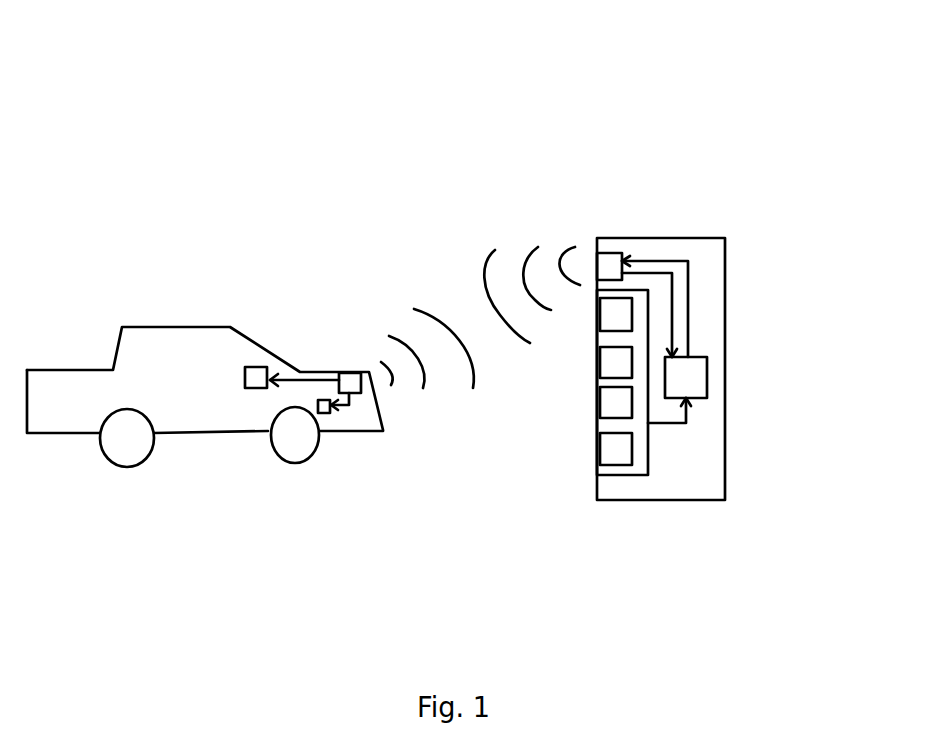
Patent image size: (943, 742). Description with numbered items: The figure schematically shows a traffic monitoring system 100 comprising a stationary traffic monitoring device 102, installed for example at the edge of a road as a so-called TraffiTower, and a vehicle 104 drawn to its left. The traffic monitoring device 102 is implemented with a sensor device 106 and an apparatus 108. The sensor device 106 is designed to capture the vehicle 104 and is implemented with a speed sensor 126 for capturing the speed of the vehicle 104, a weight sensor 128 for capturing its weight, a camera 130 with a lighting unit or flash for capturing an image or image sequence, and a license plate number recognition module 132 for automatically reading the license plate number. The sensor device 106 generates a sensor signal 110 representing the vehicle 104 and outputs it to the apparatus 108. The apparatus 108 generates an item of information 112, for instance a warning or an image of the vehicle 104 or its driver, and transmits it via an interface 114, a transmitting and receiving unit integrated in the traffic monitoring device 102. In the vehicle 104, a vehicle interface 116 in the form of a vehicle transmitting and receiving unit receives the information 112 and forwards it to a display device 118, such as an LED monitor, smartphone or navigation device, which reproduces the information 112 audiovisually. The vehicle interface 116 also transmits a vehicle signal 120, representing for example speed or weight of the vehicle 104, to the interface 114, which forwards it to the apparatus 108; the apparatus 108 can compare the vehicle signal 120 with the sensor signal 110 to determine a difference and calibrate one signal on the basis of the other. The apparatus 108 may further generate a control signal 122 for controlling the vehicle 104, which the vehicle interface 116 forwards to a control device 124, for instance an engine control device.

The traffic monitoring system 100 is at (78, 90).
The traffic monitoring device 102 is at (725, 255).
The vehicle 104 is at (171, 327).
The sensor device 106 is at (632, 477).
The apparatus 108 is at (707, 380).
The sensor signal 110 is at (677, 423).
The information 112 is at (303, 370).
The interface 114 is at (607, 253).
The vehicle interface 116 is at (350, 373).
The display device 118 is at (252, 367).
The vehicle signal 120 is at (414, 309).
The control signal 122 is at (343, 407).
The control device 124 is at (325, 414).
The speed sensor 126 is at (597, 311).
The weight sensor 128 is at (597, 362).
The camera 130 is at (597, 405).
The license plate number recognition module 132 is at (597, 450).